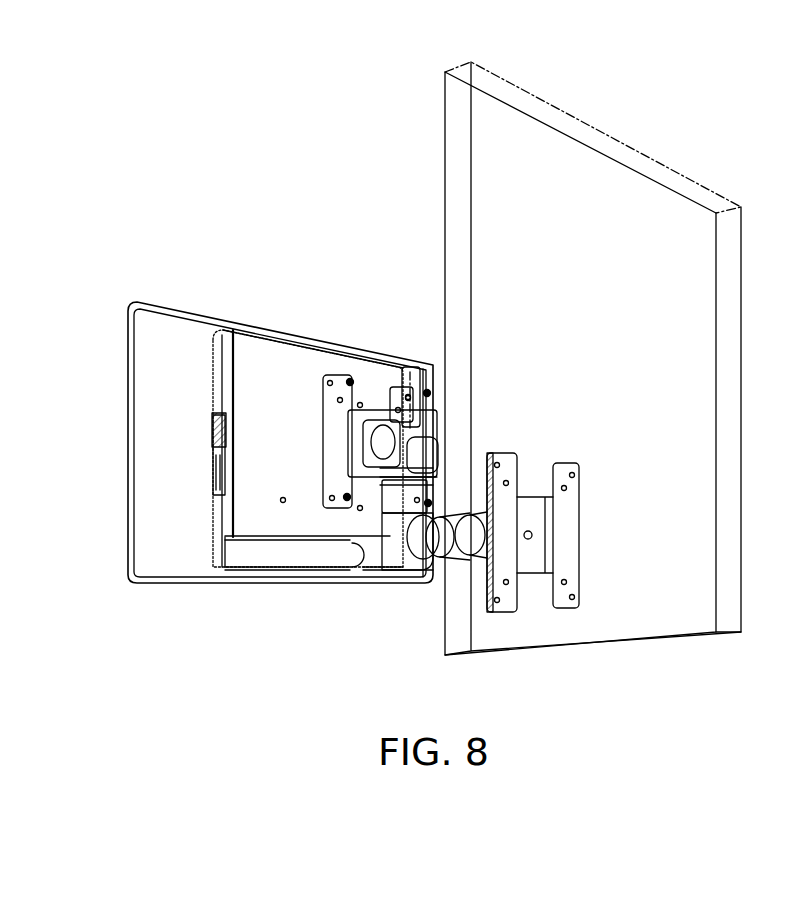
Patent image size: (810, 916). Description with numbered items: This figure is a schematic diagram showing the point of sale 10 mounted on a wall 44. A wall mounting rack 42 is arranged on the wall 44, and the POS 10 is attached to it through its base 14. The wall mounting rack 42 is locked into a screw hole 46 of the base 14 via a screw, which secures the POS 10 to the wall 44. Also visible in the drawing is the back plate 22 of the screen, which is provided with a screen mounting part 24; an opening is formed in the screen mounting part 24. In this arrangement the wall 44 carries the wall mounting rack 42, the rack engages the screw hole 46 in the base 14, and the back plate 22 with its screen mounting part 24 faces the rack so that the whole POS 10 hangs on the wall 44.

The point of sale 10 is at (230, 280).
The base 14 is at (305, 360).
The back plate 22 is at (162, 355).
The screen mounting part 24 is at (388, 560).
The wall mounting rack 42 is at (383, 445).
The wall 44 is at (582, 174).
The screw hole 46 is at (283, 503).